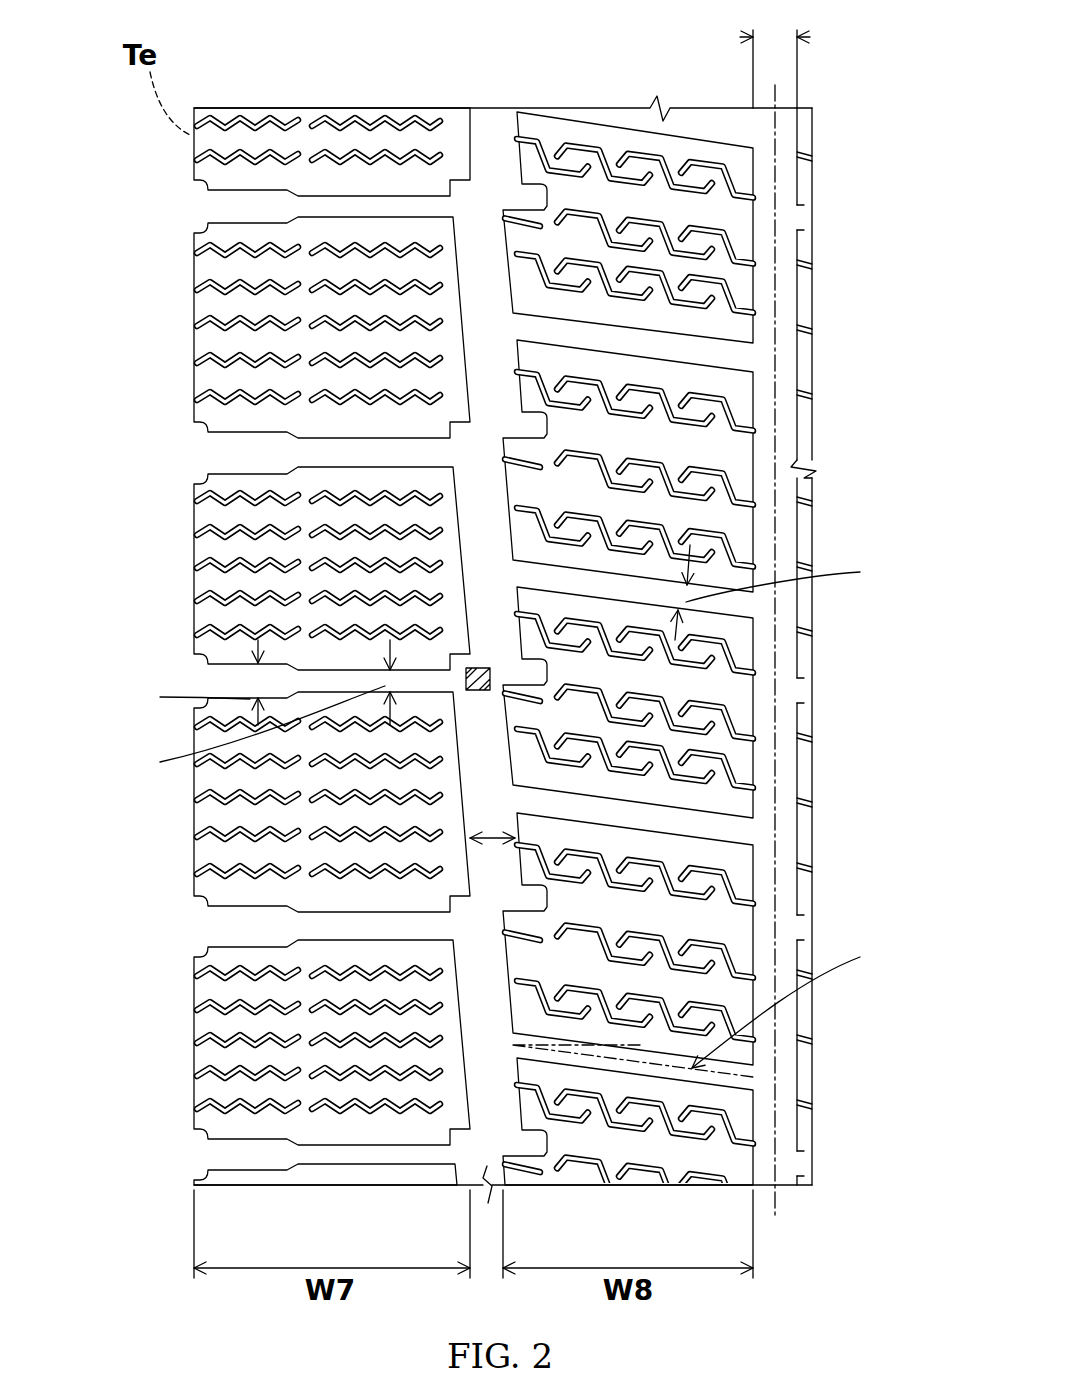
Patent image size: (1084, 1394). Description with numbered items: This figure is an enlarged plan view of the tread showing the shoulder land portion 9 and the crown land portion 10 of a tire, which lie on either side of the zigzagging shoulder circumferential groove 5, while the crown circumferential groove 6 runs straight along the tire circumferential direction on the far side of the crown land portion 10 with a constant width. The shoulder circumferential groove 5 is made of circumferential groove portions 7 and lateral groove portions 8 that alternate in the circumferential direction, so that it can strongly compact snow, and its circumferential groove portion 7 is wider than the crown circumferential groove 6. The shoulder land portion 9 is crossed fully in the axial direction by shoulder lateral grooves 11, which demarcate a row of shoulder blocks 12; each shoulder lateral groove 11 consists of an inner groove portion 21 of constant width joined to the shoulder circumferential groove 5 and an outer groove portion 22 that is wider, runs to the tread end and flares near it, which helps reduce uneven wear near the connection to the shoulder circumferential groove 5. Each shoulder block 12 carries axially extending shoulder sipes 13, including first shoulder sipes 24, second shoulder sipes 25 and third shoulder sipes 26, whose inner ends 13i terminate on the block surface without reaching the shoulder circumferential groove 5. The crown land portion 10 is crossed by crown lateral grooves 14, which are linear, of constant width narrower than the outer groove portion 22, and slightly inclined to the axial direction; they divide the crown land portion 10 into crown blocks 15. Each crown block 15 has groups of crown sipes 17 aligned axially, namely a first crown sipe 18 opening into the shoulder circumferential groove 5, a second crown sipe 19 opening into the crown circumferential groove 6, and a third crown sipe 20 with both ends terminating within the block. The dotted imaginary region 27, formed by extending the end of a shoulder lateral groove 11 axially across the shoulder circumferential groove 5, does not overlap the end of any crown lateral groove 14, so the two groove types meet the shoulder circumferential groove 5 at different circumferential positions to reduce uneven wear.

The shoulder circumferential groove 5 is at (490, 133).
The crown circumferential groove 6 is at (786, 187).
The circumferential groove portion 7 is at (473, 1053).
The lateral groove portion 8 is at (489, 1135).
The shoulder land portion 9 is at (300, 138).
The crown land portion 10 is at (620, 138).
The shoulder lateral groove 11 is at (273, 712).
The shoulder block 12 is at (300, 275).
The shoulder sipe 13 is at (266, 368).
The inner end of shoulder sipe 13i is at (440, 426).
The crown lateral groove 14 is at (588, 584).
The crown block 15 is at (703, 688).
The crown sipe 17 is at (723, 330).
The first crown sipe 18 is at (537, 372).
The second crown sipe 19 is at (809, 400).
The third crown sipe 20 is at (605, 386).
The inner groove portion 21 is at (333, 676).
The outer groove portion 22 is at (238, 684).
The first shoulder sipe 24 is at (457, 404).
The second shoulder sipe 25 is at (262, 400).
The third shoulder sipe 26 is at (262, 358).
The imaginary region 27 is at (478, 692).